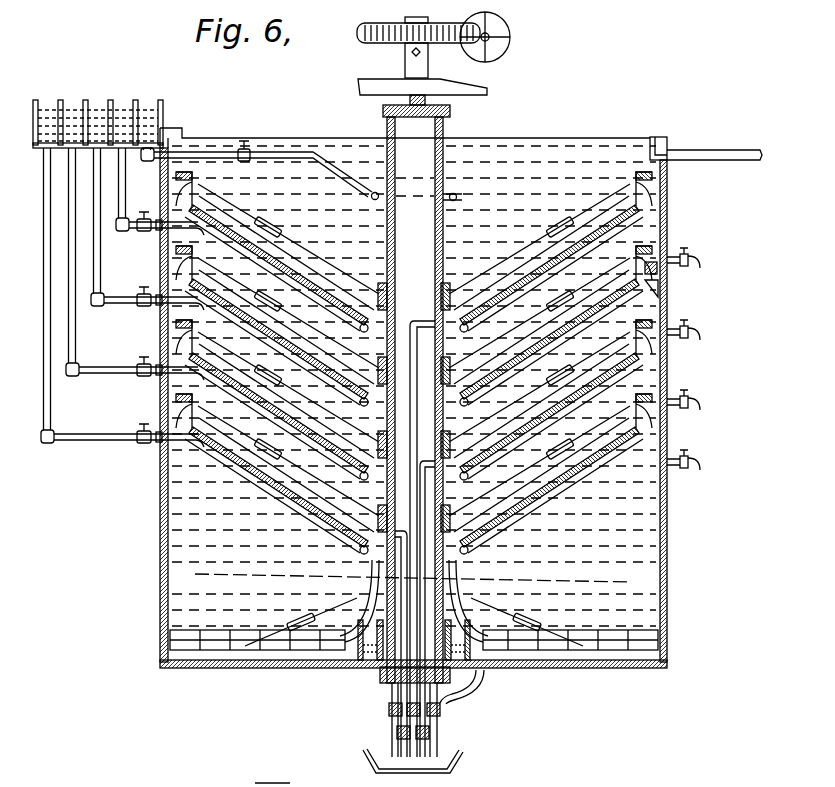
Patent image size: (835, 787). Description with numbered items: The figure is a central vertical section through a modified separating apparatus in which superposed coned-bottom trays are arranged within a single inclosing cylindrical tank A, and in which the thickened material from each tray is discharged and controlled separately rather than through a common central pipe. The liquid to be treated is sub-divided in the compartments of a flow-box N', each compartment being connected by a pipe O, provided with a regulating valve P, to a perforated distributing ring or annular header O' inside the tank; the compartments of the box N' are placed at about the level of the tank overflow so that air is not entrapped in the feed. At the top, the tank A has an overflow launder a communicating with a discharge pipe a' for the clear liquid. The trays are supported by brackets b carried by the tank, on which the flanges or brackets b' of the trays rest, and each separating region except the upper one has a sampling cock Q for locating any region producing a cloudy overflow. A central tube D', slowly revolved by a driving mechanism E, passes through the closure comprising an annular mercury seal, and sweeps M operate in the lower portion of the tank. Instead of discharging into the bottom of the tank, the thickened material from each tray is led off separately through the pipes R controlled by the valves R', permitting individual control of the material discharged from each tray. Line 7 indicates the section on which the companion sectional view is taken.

The box N' is at (98, 249).
The pipe O is at (260, 145).
The valve P is at (250, 152).
The driving mechanism E is at (366, 46).
The central tube D' is at (471, 375).
The perforated distributing ring or annular header O' is at (503, 154).
The overflow launder a is at (675, 133).
The discharge pipe a' is at (716, 139).
The sampling cock Q is at (692, 261).
The flanges or brackets b' is at (698, 285).
The brackets b is at (689, 309).
The pipes R is at (414, 520).
The tank A is at (667, 507).
The section line 7— 7 is at (407, 583).
The sweeps M is at (665, 640).
The valves R' is at (446, 721).